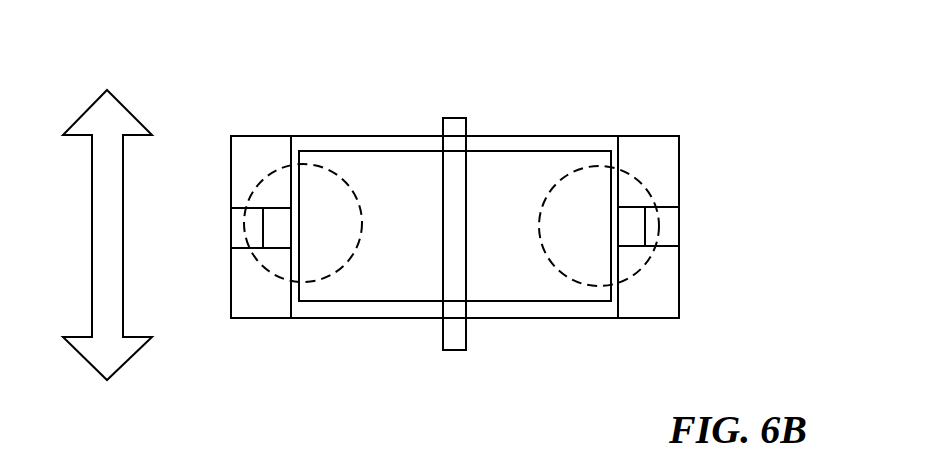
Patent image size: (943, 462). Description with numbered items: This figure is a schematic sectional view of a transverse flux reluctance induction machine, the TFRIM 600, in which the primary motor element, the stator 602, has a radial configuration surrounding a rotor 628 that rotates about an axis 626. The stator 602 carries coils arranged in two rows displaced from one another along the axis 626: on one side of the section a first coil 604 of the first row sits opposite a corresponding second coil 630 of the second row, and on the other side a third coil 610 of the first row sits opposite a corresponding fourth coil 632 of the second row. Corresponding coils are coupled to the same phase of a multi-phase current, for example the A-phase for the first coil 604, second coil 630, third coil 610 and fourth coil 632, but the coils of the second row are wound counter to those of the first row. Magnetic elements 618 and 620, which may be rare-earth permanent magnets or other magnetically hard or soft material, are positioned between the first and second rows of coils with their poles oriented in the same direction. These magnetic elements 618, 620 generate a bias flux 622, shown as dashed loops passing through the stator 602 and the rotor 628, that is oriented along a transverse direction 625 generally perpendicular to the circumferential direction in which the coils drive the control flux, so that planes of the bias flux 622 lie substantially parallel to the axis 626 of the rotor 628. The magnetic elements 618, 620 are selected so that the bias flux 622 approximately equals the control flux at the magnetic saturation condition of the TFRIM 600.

The TFRIM 600 is at (202, 64).
The stator 602 is at (458, 191).
The first coil 604 is at (230, 282).
The third coil 610 is at (679, 283).
The magnetic element 618 is at (230, 222).
The magnetic element 620 is at (679, 228).
The bias flux 622 is at (327, 277).
The transverse direction 625 is at (92, 213).
The axis 626 is at (458, 117).
The rotor 628 is at (455, 226).
The second coil 630 is at (230, 168).
The fourth coil 632 is at (679, 170).